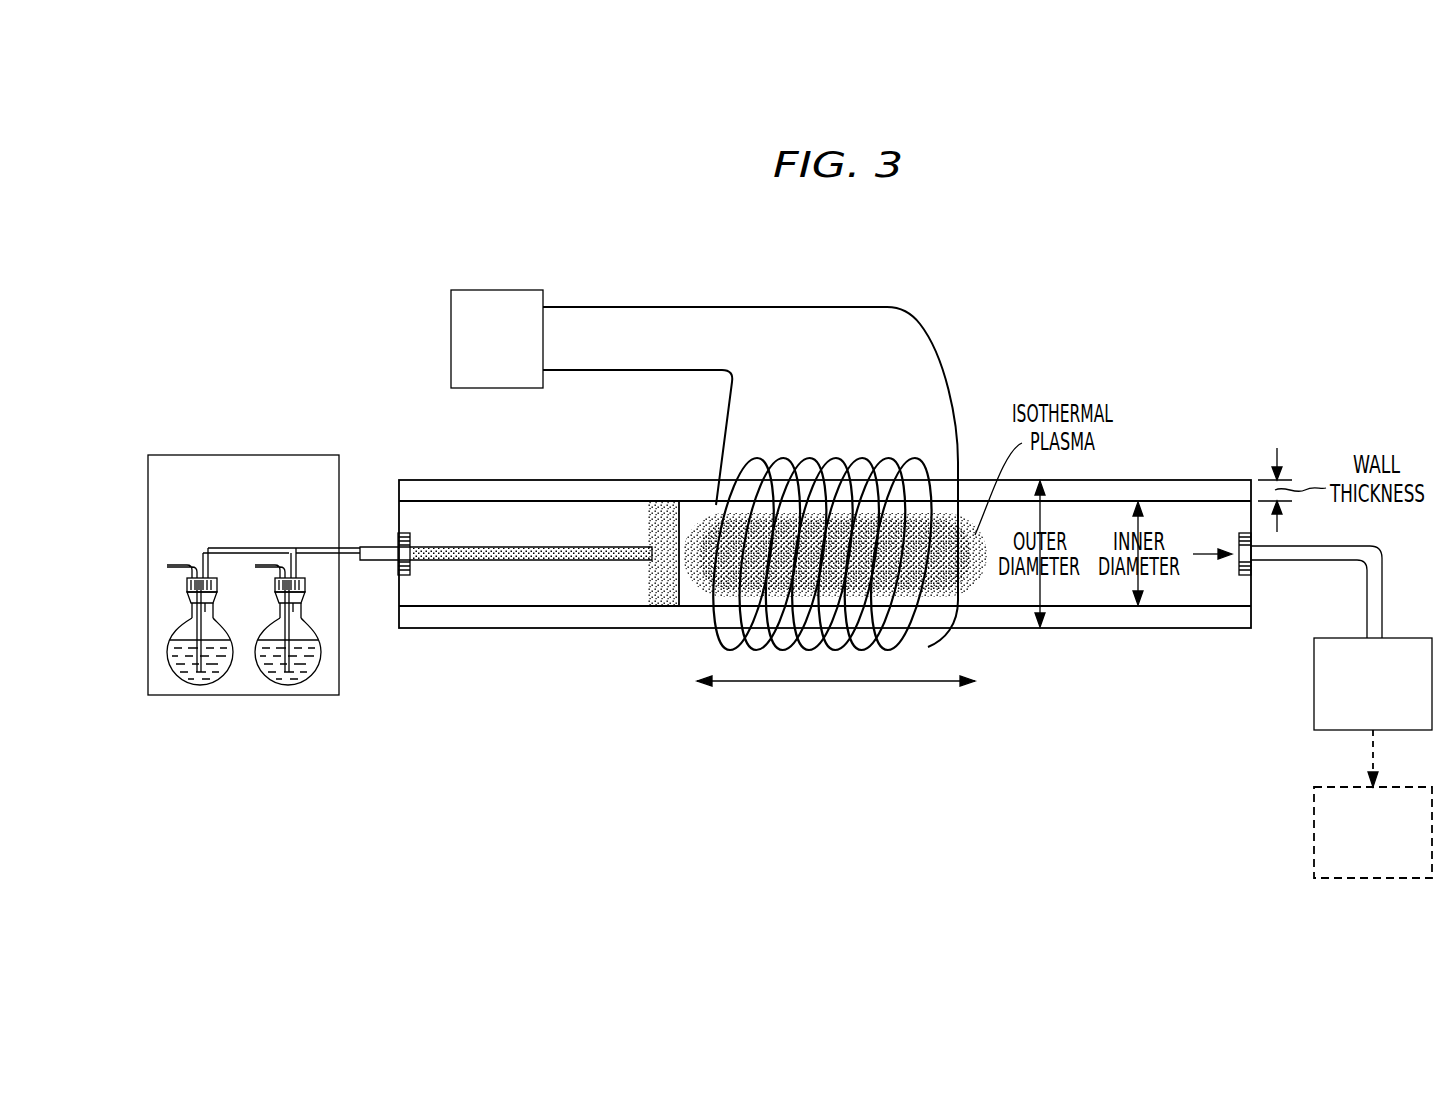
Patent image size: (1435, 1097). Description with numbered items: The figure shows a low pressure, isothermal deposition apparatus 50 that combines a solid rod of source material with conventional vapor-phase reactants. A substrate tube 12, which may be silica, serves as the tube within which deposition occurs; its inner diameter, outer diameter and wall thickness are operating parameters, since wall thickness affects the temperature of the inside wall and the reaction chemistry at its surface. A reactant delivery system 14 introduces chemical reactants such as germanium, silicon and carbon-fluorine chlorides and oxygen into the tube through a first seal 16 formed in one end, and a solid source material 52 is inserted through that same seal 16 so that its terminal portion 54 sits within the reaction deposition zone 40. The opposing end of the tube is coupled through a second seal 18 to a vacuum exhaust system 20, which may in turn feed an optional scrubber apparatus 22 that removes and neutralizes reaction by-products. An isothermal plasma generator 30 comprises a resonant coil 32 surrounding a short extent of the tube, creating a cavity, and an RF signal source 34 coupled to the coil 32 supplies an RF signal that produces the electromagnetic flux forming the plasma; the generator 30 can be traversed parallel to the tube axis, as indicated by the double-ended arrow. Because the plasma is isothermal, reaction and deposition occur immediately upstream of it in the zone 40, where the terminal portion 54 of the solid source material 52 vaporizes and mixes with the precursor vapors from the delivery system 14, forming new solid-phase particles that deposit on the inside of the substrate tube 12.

The substrate tube 12 is at (1185, 479).
The reactant delivery system 14 is at (200, 456).
The first seal 16 is at (411, 566).
The second seal 18 is at (1254, 572).
The vacuum exhaust system 20 is at (1314, 684).
The scrubber apparatus 22 is at (1314, 830).
The isothermal plasma generator 30 is at (853, 290).
The resonant coil 32 is at (809, 456).
The RF signal source 34 is at (451, 336).
The reaction deposition zone 40 is at (662, 583).
The low pressure isothermal deposition apparatus 50 is at (1263, 334).
The solid source material 52 is at (606, 561).
The terminal portion 54 is at (662, 520).